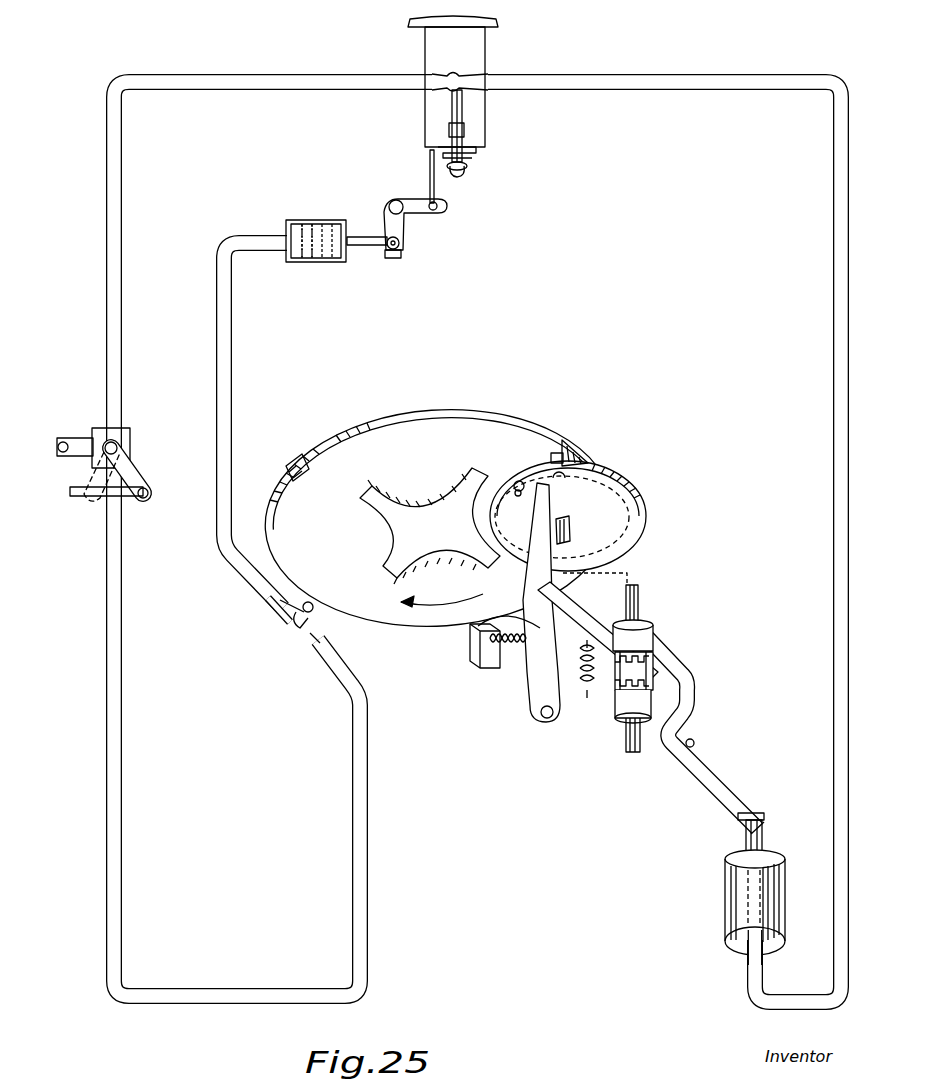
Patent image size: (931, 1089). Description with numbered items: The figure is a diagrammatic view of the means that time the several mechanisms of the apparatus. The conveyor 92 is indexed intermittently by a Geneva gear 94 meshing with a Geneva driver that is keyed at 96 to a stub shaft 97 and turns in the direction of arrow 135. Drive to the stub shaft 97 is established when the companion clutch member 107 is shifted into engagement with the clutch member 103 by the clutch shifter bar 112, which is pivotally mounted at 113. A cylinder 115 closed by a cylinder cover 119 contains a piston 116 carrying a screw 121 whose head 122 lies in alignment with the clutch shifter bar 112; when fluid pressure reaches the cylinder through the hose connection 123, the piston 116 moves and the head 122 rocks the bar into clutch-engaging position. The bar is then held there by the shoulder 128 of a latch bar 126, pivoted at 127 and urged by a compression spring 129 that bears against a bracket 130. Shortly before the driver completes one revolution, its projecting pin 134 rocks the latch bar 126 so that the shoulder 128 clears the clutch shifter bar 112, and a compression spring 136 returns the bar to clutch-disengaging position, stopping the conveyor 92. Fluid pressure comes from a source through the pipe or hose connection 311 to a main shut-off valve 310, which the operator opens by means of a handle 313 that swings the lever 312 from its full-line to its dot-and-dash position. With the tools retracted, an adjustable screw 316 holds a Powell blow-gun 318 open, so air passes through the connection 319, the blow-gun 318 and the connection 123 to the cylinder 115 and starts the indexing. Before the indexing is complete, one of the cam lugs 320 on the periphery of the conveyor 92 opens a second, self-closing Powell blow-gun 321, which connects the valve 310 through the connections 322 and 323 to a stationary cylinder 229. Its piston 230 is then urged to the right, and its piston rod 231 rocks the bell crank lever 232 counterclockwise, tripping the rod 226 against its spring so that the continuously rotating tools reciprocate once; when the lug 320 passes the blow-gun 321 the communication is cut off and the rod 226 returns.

The conveyor 92 is at (421, 413).
The Geneva gear 94 is at (392, 526).
The key 96 is at (640, 520).
The stub shaft 97 is at (571, 520).
The clutch member 103 is at (625, 732).
The companion clutch member 107 is at (641, 664).
The clutch shifter bar 112 is at (572, 626).
The pivot 113 is at (697, 745).
The cylinder 115 is at (770, 889).
The piston 116 is at (745, 894).
The cylinder cover 119 is at (772, 857).
The screw 121 is at (762, 841).
The screw head 122 is at (765, 817).
The tube or hose connection 123 is at (834, 317).
The latch bar 126 is at (533, 680).
The pivot 127 is at (546, 719).
The shoulder 128 is at (470, 636).
The compression spring 129 is at (502, 652).
The bracket 130 is at (488, 655).
The projecting pin 134 is at (516, 482).
The arrow 135 is at (450, 604).
The compression spring 136 is at (588, 696).
The rod 226 is at (428, 168).
The stationary cylinder 229 is at (310, 262).
The piston 230 is at (310, 240).
The piston rod 231 is at (385, 250).
The bell crank lever 232 is at (390, 216).
The main shut-off valve 310 is at (125, 445).
The pipe or hose connection 311 is at (70, 440).
The lever 312 is at (130, 478).
The handle 313 is at (76, 496).
The adjustable screw 316 is at (462, 100).
The Powell blow-gun 318 is at (462, 78).
The connection 319 is at (116, 183).
The cam lug 320 is at (296, 456).
The Powell blow-gun 321 is at (300, 632).
The connection 322 is at (360, 925).
The connection 323 is at (228, 355).